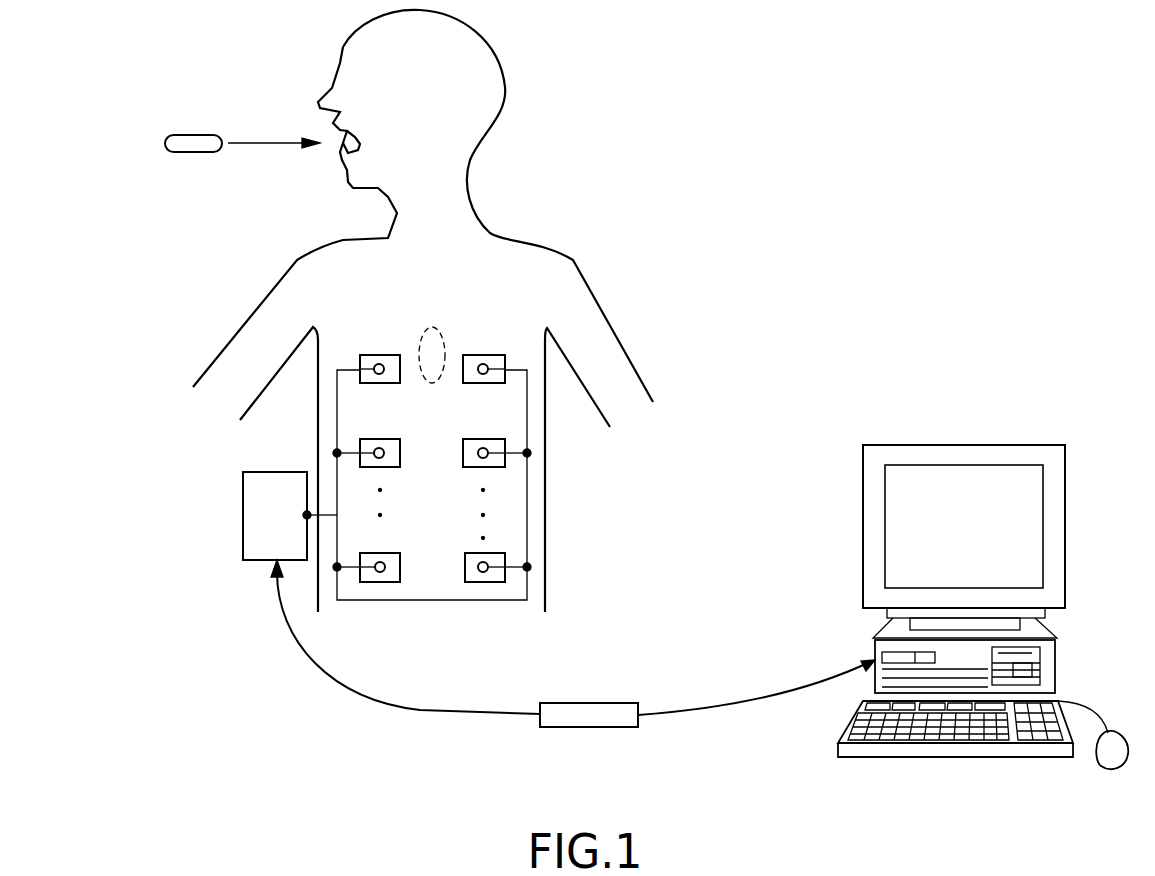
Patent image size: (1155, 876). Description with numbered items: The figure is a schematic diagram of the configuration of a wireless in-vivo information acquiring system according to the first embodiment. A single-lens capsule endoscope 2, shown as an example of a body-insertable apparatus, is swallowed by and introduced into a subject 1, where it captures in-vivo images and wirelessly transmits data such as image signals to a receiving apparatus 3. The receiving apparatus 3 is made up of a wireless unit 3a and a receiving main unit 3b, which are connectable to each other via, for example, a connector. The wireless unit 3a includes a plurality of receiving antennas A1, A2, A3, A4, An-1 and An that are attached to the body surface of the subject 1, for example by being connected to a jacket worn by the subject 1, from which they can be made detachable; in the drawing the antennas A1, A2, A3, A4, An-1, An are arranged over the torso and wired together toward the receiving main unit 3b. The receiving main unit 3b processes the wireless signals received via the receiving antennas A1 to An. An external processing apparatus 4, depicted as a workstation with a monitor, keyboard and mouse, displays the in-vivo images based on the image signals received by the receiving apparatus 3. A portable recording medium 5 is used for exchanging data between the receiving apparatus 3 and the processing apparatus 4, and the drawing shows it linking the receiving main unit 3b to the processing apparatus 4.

The subject 1 is at (478, 32).
The capsule endoscope 2 is at (213, 153).
The receiving apparatus 3 is at (300, 485).
The wireless unit 3a is at (295, 457).
The receiving main unit 3b is at (243, 497).
The processing apparatus 4 is at (945, 445).
The portable recording medium 5 is at (603, 727).
The receiving antenna A1 is at (379, 355).
The receiving antenna A2 is at (483, 355).
The receiving antenna A3 is at (379, 439).
The receiving antenna A4 is at (483, 439).
The receiving antenna An-1 is at (373, 553).
The receiving antenna An is at (477, 553).